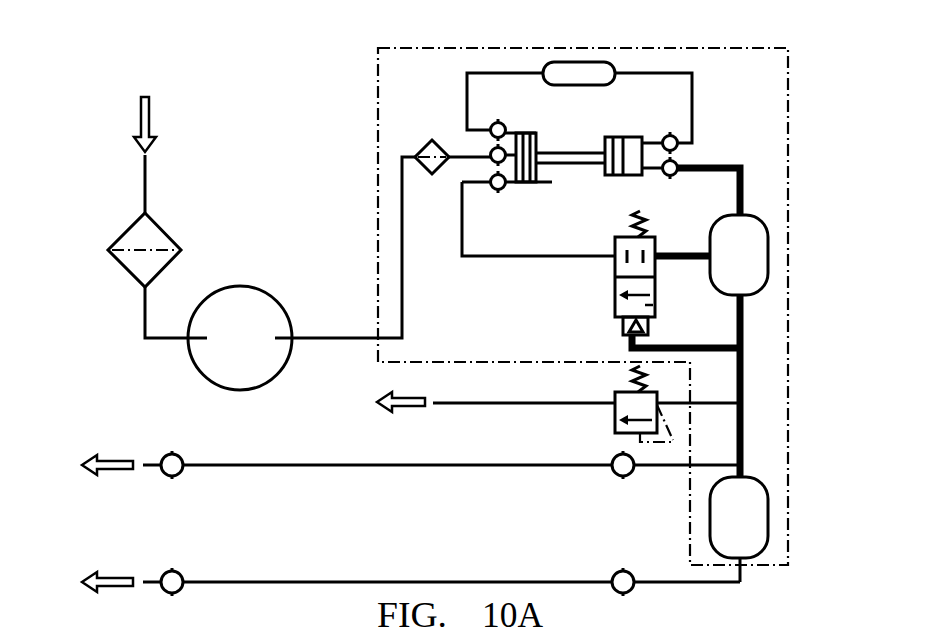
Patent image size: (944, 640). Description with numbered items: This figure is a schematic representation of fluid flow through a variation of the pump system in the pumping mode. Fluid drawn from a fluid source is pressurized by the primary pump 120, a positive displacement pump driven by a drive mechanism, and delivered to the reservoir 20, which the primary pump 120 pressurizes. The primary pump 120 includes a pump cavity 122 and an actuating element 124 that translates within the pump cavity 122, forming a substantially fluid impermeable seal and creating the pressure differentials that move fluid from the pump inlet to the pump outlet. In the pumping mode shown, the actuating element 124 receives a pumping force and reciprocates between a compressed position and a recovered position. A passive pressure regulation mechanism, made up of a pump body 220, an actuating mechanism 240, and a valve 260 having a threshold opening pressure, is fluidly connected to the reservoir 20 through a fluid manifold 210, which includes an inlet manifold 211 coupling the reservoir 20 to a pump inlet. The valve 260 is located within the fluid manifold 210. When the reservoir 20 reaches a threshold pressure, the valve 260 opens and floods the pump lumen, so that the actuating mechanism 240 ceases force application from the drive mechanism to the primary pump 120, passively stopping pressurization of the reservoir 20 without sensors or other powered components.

The reservoir 20 is at (382, 525).
The primary pump 120 is at (656, 114).
The pump cavity 122 is at (645, 155).
The actuating element 124 is at (615, 128).
The fluid manifold 210 is at (741, 579).
The inlet manifold 211 is at (633, 352).
The pump body 220 is at (491, 156).
The actuating mechanism 240 is at (543, 137).
The valve 260 is at (647, 306).